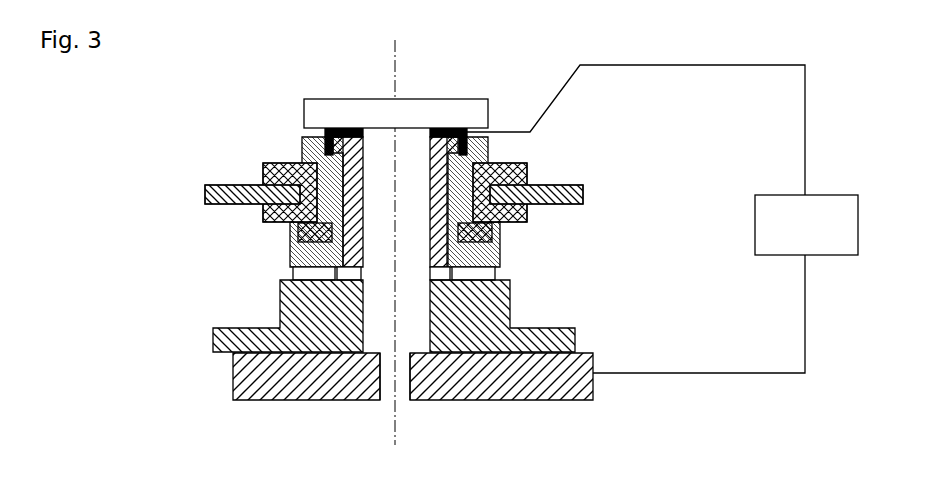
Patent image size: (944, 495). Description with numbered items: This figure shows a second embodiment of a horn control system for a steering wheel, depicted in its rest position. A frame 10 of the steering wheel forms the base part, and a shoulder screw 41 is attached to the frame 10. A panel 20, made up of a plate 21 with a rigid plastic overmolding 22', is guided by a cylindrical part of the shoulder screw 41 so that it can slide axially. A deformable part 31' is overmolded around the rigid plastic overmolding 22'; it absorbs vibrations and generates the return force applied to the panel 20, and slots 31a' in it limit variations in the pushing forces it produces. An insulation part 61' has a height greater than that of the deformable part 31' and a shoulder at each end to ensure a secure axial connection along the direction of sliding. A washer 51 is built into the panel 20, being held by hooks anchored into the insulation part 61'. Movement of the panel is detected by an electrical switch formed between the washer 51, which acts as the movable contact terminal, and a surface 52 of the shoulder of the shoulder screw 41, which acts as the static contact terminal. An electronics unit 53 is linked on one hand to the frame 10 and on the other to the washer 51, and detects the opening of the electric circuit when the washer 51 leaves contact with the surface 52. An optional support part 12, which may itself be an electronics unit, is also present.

The frame 10 is at (582, 400).
The support part 12 is at (575, 328).
The panel 20 is at (473, 152).
The plate 21 is at (433, 176).
The rigid plastic overmolding 22' is at (465, 161).
The deformable part 31' is at (336, 190).
The slots 31a' is at (253, 281).
The shoulder screw 41 is at (410, 400).
The washer 51 is at (333, 128).
The surface of the shoulder 52 is at (382, 110).
The electronics unit 53 is at (662, 219).
The insulation part 61' is at (537, 267).